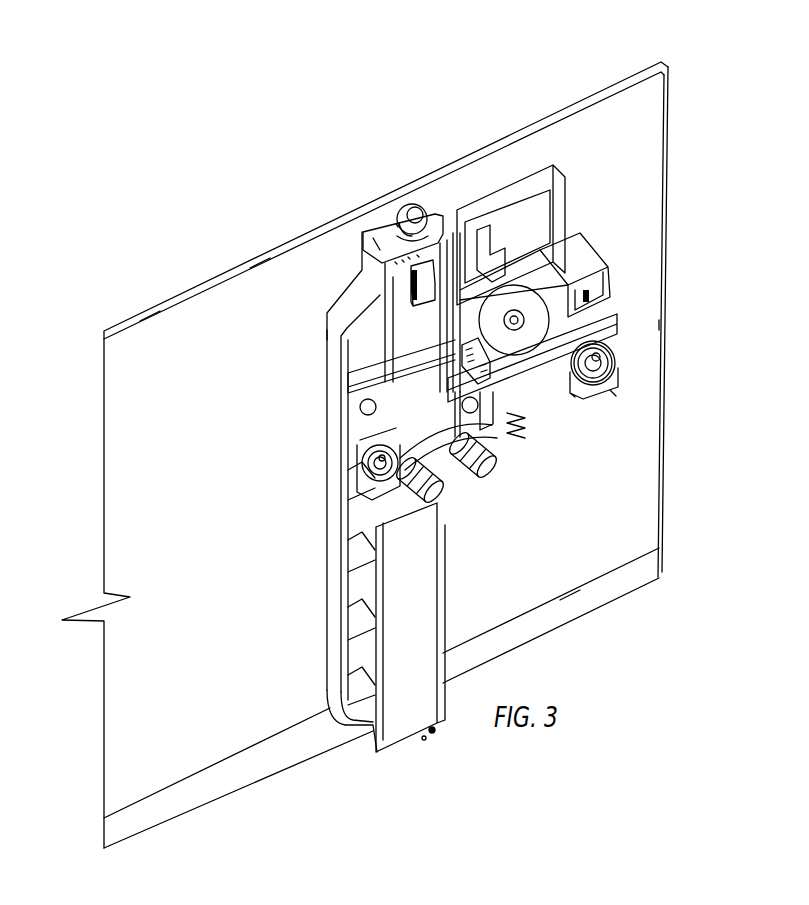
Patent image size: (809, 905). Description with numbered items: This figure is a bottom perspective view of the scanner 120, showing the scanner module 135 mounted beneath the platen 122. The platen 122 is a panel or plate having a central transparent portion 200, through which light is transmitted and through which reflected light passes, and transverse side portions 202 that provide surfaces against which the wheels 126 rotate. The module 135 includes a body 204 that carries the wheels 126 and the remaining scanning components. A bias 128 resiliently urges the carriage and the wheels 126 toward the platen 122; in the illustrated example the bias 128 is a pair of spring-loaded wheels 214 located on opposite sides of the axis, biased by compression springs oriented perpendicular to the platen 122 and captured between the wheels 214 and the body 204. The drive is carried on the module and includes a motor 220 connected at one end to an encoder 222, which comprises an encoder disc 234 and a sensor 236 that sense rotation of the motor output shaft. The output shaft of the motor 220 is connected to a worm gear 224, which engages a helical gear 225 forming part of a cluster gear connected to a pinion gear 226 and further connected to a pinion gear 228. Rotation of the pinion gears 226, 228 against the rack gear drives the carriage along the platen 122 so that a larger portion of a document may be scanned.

The scanner 120 is at (329, 146).
The platen 122 is at (650, 493).
The wheels 126 is at (412, 205).
The bias 128 is at (616, 364).
The scanner module 135 is at (316, 622).
The central transparent portion 200 is at (210, 326).
The side portions 202 is at (302, 228).
The body 204 is at (330, 666).
The spring-loaded wheels 214 is at (598, 387).
The motor 220 is at (550, 387).
The encoder 222 is at (620, 345).
The worm gear 224 is at (507, 450).
The helical gear 225 is at (460, 490).
The pinion gear 226 is at (483, 480).
The pinion gear 228 is at (418, 487).
The encoder disc 234 is at (577, 270).
The sensor 236 is at (568, 332).